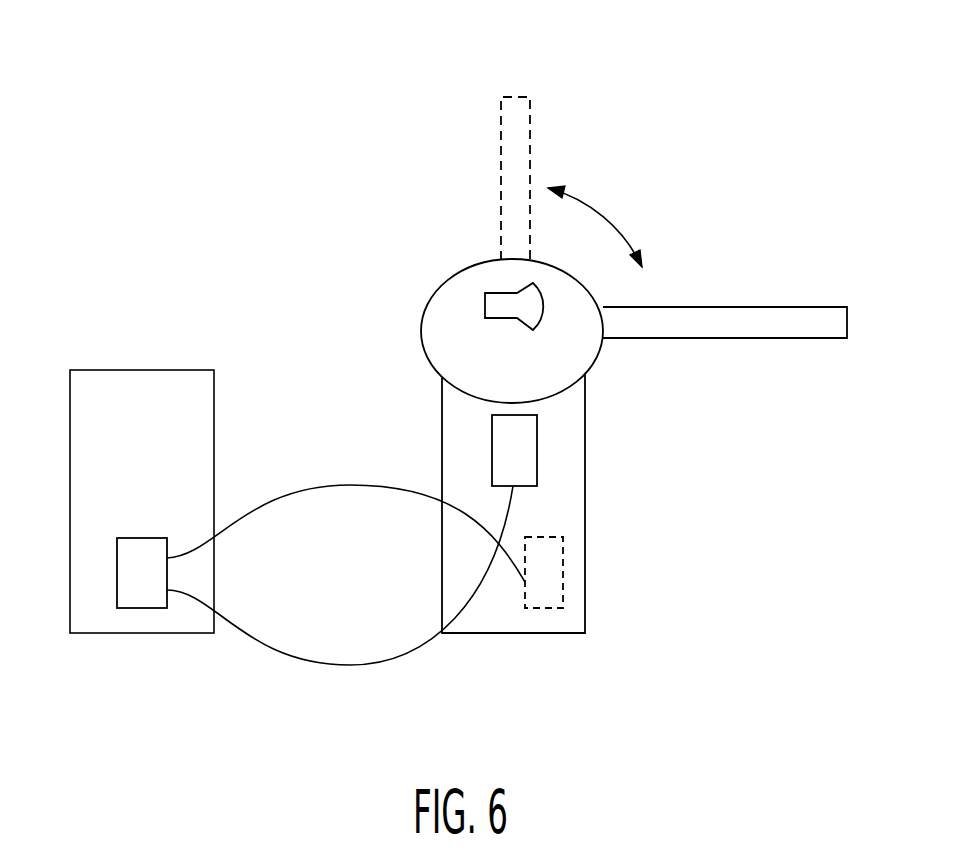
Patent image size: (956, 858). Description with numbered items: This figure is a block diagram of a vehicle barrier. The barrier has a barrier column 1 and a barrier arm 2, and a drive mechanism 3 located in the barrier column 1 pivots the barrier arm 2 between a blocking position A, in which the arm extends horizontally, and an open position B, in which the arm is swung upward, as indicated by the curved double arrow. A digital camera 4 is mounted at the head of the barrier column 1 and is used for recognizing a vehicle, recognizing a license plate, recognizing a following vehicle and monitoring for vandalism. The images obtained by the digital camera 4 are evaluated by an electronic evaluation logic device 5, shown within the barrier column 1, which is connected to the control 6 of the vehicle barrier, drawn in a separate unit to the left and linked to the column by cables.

The barrier column 1 is at (570, 500).
The barrier arm 2 is at (633, 203).
The drive mechanism 3 is at (502, 445).
The digital camera 4 is at (495, 305).
The electronic evaluation logic device 5 is at (552, 572).
The control 6 is at (143, 598).
The blocking position A is at (766, 307).
The open position B is at (530, 120).